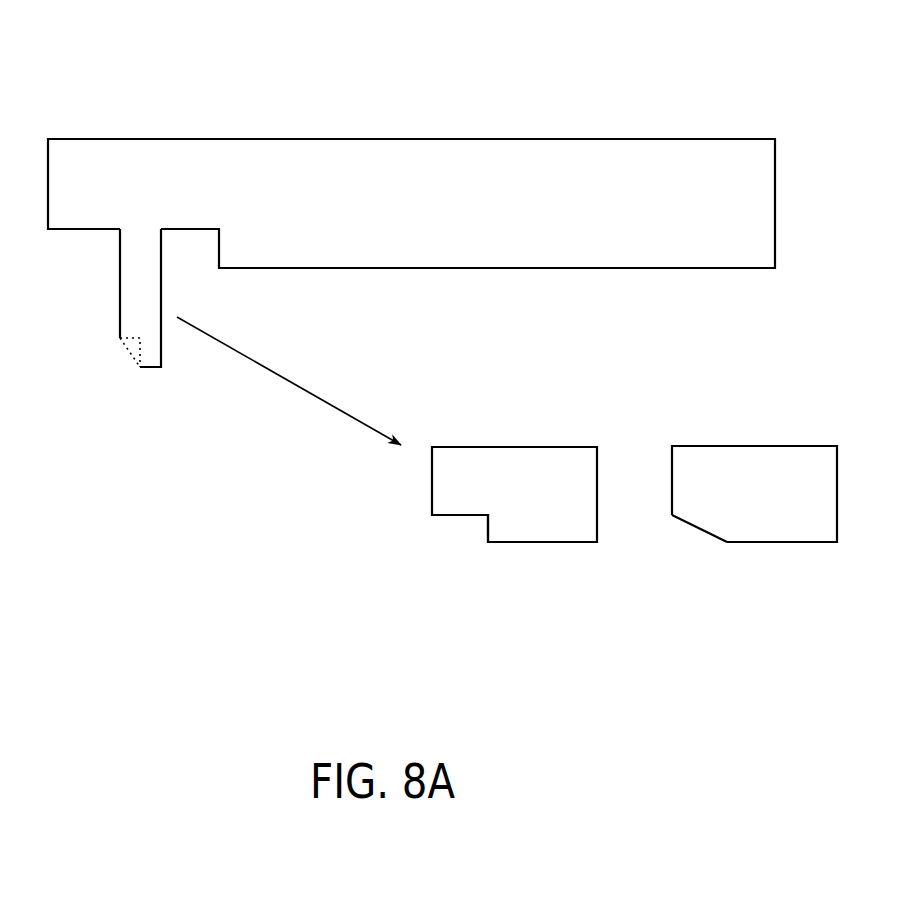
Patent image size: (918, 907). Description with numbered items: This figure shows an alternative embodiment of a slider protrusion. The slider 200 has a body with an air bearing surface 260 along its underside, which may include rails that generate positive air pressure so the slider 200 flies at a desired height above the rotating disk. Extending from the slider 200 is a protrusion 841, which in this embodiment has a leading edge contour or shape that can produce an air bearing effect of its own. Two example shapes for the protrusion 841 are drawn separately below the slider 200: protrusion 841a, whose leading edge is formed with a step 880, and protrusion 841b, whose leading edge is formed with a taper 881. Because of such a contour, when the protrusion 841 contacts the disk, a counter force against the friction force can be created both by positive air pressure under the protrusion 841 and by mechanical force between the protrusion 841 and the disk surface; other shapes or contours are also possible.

The slider 200 is at (710, 87).
The protrusion 841 is at (119, 254).
The air bearing surface 260 is at (459, 272).
The protrusion having step 841a is at (552, 497).
The protrusion having taper 841b is at (792, 498).
The step 880 is at (454, 531).
The taper 881 is at (681, 533).